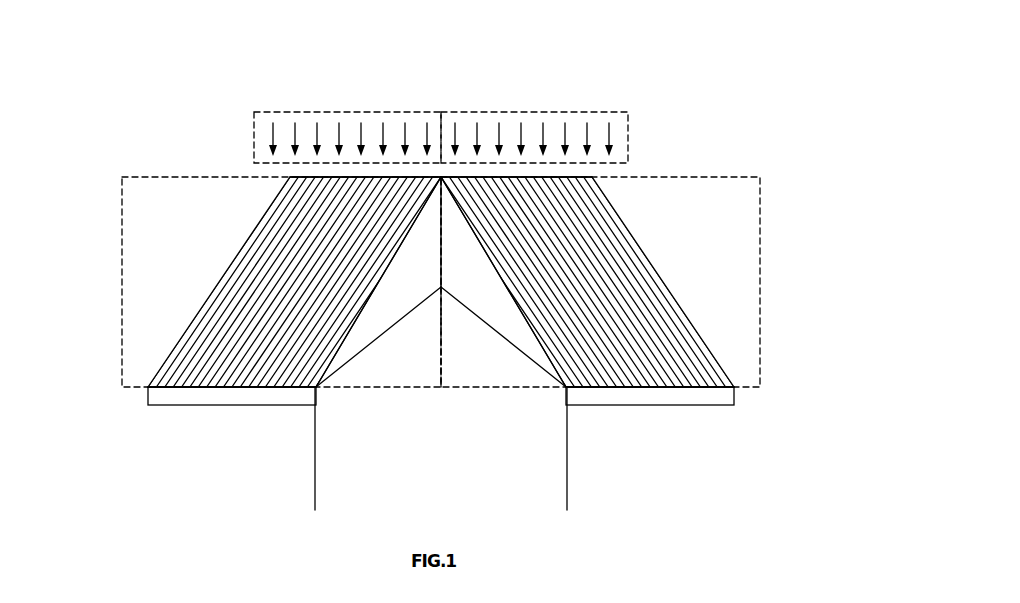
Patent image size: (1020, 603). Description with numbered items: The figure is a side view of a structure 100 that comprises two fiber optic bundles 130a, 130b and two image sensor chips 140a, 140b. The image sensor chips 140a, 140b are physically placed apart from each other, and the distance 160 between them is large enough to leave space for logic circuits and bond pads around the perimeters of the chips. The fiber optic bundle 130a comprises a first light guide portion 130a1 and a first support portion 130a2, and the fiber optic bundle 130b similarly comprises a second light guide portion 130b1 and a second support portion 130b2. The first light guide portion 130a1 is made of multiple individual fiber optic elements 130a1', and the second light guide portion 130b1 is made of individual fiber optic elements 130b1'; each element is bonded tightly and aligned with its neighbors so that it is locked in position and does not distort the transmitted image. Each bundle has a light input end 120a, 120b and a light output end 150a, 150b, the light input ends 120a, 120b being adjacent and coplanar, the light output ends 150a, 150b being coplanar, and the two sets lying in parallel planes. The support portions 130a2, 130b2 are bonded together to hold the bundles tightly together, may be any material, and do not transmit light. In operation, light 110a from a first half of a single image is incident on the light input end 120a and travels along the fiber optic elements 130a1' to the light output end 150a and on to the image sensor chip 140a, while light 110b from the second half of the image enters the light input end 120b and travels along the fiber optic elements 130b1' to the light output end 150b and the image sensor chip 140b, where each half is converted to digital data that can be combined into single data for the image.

The structure 100 is at (710, 68).
The light 110a is at (273, 112).
The light 110b is at (609, 112).
The light input end 120a is at (290, 177).
The light input end 120b is at (592, 177).
The fiber optic bundle 130a is at (122, 300).
The fiber optic bundle 130b is at (760, 300).
The first light guide portion 130a1 is at (302, 282).
The second light guide portion 130b1 is at (582, 282).
The first support portion 130a2 is at (438, 287).
The second support portion 130b2 is at (500, 287).
The fiber optic element 130a1' is at (378, 362).
The fiber optic element 130b1' is at (504, 362).
The image sensor chip 140a is at (148, 396).
The image sensor chip 140b is at (734, 396).
The light output end 150a is at (232, 387).
The light output end 150b is at (650, 387).
The distance 160 is at (558, 495).